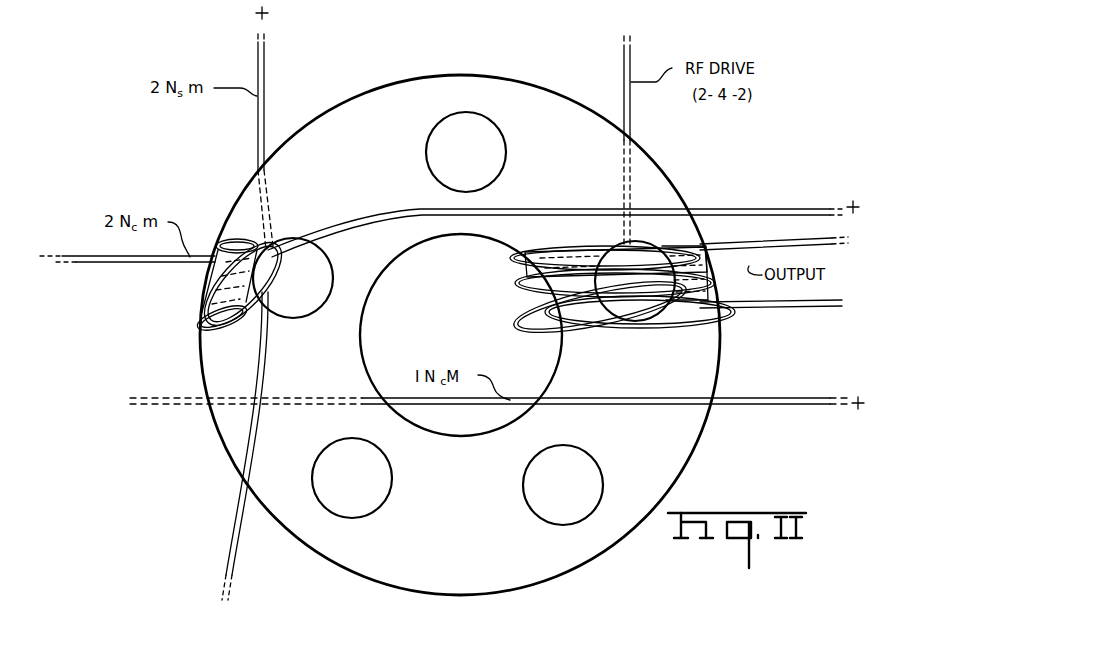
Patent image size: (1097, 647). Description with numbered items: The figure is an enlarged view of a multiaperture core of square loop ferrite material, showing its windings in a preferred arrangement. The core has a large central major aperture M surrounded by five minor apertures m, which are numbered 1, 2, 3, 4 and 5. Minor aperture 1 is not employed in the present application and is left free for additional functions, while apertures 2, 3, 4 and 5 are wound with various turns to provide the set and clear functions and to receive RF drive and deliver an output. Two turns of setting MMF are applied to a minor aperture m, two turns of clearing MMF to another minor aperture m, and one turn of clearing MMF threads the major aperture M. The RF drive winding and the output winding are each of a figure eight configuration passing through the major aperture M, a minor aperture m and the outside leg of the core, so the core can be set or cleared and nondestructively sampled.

The minor aperture 1 is at (362, 500).
The minor aperture 2 is at (328, 306).
The minor aperture 3 is at (507, 170).
The minor aperture 4 is at (636, 322).
The minor aperture 5 is at (505, 532).
The core minor aperture m is at (464, 330).
The core major aperture M is at (486, 234).